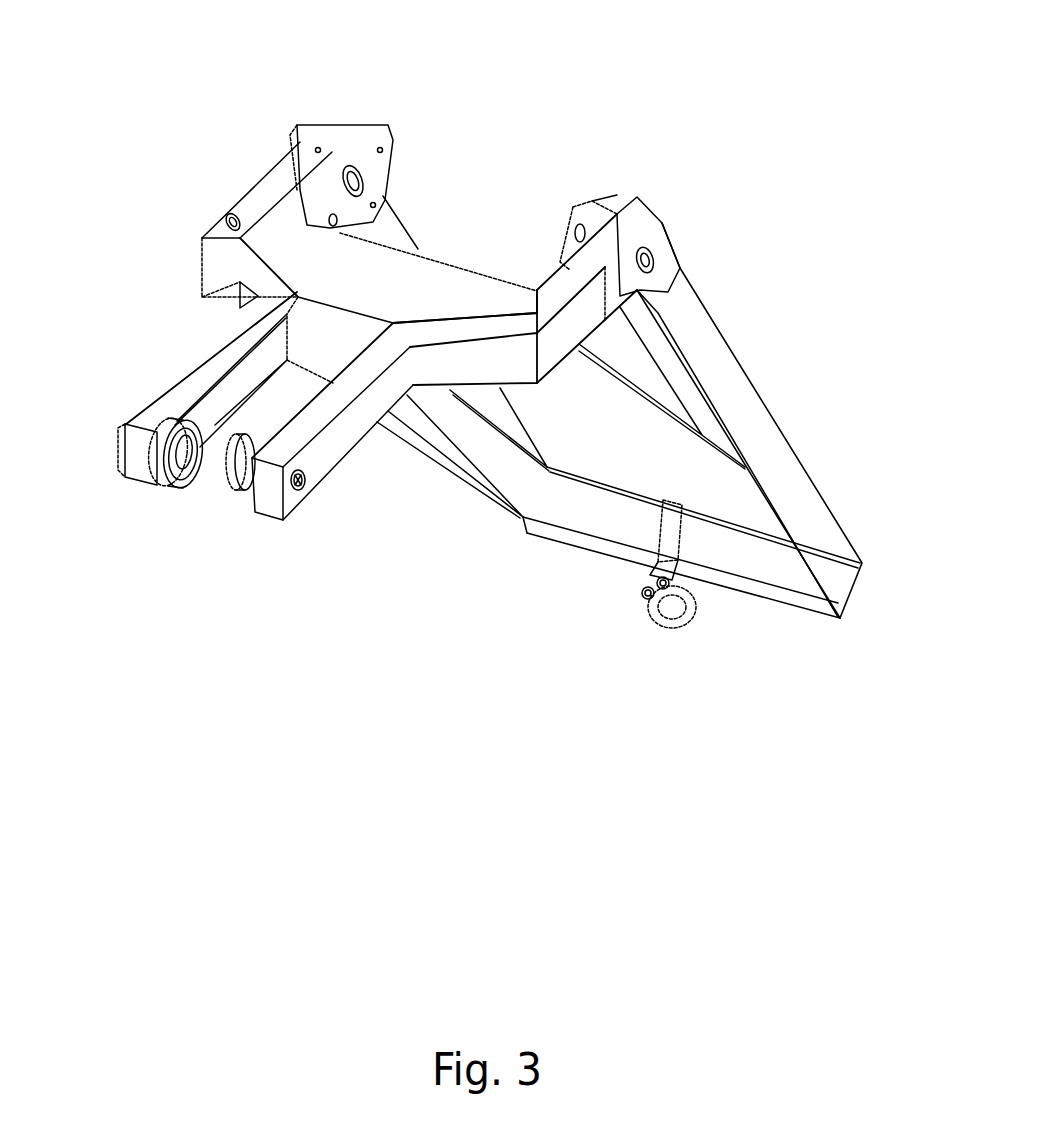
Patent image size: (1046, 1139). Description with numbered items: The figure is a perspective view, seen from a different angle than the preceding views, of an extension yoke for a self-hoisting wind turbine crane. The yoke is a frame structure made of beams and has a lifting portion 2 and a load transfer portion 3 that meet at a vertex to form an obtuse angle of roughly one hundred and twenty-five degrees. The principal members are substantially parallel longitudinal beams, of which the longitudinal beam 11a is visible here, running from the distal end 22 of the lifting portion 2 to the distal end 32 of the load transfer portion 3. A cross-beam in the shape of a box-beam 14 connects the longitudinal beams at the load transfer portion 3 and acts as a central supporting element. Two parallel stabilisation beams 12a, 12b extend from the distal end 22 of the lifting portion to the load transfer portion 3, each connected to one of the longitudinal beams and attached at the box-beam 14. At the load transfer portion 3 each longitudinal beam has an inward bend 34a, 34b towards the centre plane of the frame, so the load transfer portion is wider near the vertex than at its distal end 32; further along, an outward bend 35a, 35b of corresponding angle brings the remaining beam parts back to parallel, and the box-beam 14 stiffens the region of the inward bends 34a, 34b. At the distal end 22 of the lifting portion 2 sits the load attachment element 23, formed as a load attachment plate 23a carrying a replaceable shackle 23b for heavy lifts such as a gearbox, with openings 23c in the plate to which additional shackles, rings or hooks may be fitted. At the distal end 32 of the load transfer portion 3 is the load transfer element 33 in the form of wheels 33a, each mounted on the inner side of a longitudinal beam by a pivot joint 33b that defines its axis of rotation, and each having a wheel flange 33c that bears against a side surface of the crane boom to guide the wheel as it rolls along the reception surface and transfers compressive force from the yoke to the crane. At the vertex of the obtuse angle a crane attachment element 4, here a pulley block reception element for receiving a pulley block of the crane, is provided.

The lifting portion 2 is at (733, 303).
The load transfer portion 3 is at (143, 221).
The crane attachment element 4 is at (407, 107).
The longitudinal beam 11a is at (785, 483).
The stabilisation beam 12a is at (647, 433).
The stabilisation beam 12b is at (452, 438).
The box-beam 14 is at (393, 272).
The distal end of the lifting portion 22 is at (840, 572).
The load attachment element 23 is at (701, 663).
The load attachment plate 23a is at (655, 560).
The shackle 23b is at (682, 625).
The openings 23c is at (648, 595).
The distal end of the load transfer portion 32 is at (313, 460).
The load transfer element 33 is at (191, 612).
The wheel 33a is at (238, 453).
The pivot joint 33b is at (298, 492).
The wheel flange 33c is at (245, 505).
The inward bend 34a is at (537, 310).
The inward bend 34b is at (202, 238).
The outward bend 35a is at (413, 362).
The outward bend 35b is at (257, 293).